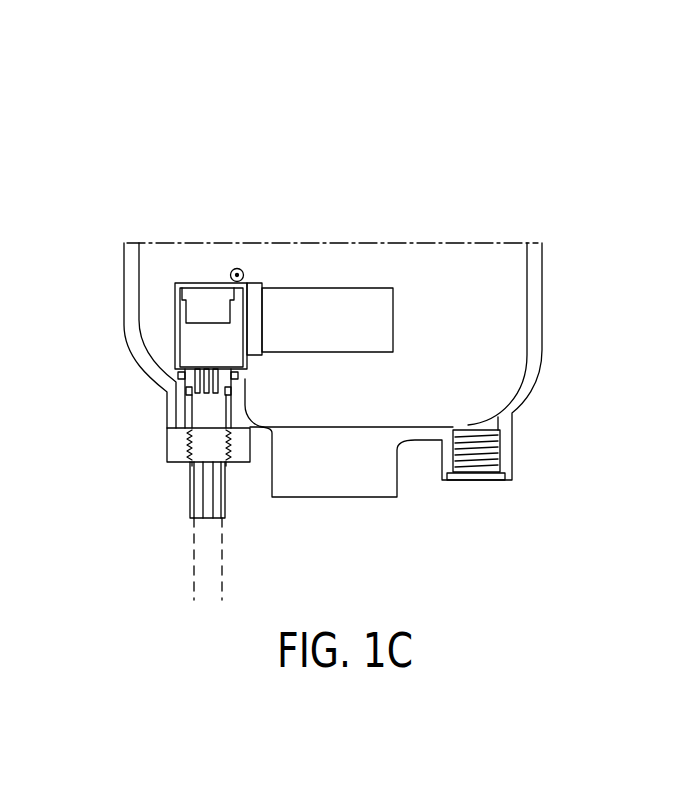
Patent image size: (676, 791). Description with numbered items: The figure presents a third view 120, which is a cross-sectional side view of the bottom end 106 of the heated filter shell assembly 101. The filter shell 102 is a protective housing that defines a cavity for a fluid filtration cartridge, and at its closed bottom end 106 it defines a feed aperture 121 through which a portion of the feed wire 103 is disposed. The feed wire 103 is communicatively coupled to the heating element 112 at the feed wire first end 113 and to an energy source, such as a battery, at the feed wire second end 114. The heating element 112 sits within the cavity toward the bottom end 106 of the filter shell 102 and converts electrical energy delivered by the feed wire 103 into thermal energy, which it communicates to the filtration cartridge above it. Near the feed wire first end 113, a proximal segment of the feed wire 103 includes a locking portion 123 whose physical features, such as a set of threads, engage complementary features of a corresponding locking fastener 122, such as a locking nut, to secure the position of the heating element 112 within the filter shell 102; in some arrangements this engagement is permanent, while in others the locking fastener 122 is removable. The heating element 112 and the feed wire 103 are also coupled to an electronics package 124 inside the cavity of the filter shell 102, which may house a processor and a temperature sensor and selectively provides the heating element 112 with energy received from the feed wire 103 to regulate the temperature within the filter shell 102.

The heated filter shell assembly 101 is at (233, 148).
The filter shell 102 is at (131, 262).
The feed wire 103 is at (210, 498).
The bottom end 106 is at (556, 268).
The heating element 112 is at (328, 300).
The feed wire first end 113 is at (205, 485).
The feed wire second end 114 is at (193, 565).
The third view 120 is at (184, 165).
The feed aperture 121 is at (178, 408).
The locking fastener 122 is at (177, 446).
The locking portion 123 is at (220, 450).
The electronics package 124 is at (200, 300).